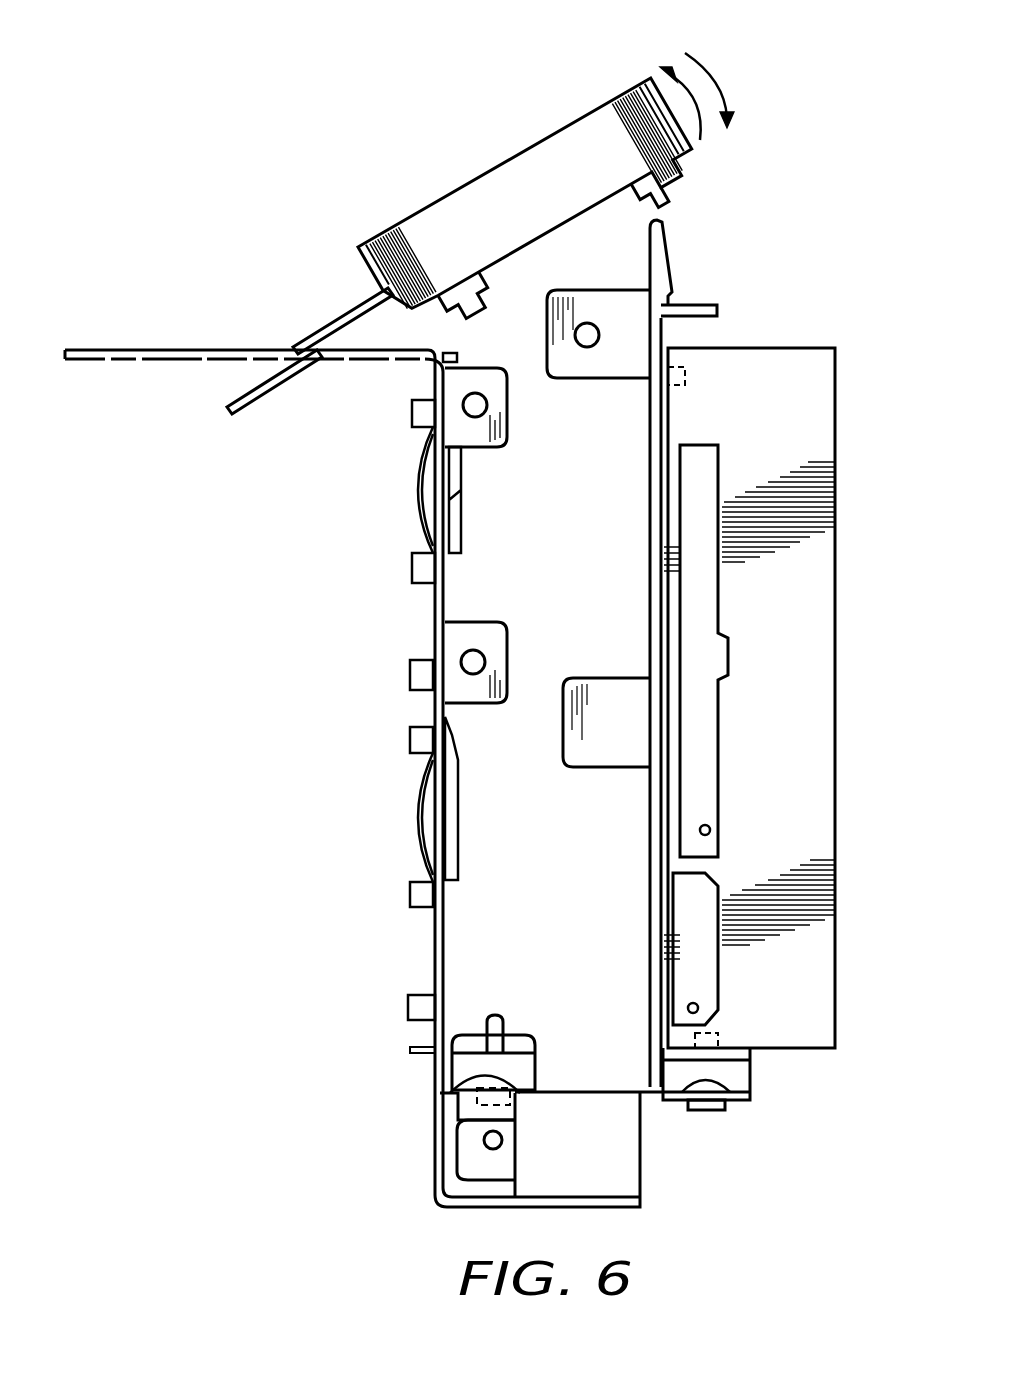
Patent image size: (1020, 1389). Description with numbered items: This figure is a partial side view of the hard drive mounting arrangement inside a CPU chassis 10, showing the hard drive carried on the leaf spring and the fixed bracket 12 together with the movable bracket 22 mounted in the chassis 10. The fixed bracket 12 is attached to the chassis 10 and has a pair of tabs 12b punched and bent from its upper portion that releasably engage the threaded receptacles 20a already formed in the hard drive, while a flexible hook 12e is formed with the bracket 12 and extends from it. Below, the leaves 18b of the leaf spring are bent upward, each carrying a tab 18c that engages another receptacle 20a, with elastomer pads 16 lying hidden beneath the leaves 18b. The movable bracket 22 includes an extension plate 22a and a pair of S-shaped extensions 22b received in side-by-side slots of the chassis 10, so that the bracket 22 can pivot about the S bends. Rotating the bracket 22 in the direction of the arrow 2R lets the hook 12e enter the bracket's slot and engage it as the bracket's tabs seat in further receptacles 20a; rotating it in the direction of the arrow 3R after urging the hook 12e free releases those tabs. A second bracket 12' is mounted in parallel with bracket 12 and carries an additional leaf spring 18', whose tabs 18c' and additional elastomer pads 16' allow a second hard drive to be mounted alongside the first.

The CPU chassis 10 is at (150, 348).
The bracket 12 is at (699, 693).
The bracket 12' is at (501, 778).
The tabs 12b is at (653, 400).
The flexible hook 12e is at (650, 255).
The elastomer pads 16 is at (706, 1134).
The elastomer pads 16' is at (440, 1124).
The leaf spring 18' is at (501, 1036).
The leaves 18b is at (750, 1075).
The tab 18c is at (649, 1063).
The tabs 18c' is at (483, 997).
The threaded receptacles 20a is at (685, 375).
The movable bracket 22 is at (552, 212).
The extension plate 22a is at (335, 310).
The S shaped extensions 22b is at (308, 368).
The directional arrow 2R is at (733, 72).
The directional arrow 3R is at (666, 68).